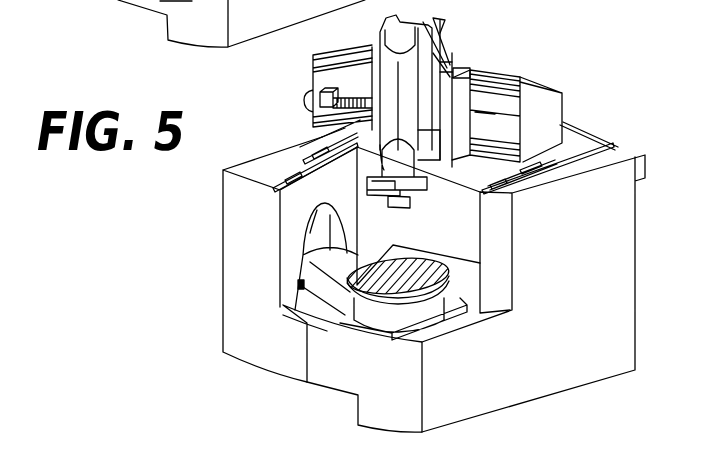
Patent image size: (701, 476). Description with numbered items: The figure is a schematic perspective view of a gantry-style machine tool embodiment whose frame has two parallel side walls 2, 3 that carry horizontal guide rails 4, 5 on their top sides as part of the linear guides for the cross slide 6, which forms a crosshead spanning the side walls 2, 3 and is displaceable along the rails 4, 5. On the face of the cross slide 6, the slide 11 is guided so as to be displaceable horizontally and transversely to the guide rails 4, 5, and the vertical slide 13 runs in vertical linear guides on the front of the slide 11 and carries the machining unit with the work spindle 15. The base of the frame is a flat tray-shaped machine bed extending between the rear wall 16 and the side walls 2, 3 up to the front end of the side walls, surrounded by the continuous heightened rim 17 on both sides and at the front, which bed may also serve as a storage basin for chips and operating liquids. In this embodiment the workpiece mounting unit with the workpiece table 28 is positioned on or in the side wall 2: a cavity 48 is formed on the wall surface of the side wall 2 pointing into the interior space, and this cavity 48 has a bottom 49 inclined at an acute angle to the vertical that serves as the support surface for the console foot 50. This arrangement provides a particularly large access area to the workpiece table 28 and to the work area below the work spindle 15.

The side wall 2 is at (234, 232).
The side wall 3 is at (569, 277).
The horizontal guide rail 4 is at (322, 142).
The horizontal guide rail 5 is at (590, 131).
The cross slide 6 is at (547, 117).
The slide 11 is at (457, 97).
The vertical slide 13 is at (438, 80).
The work spindle 15 is at (393, 207).
The rear wall 16 is at (461, 234).
The heightened rim 17 is at (384, 375).
The workpiece table 28 is at (445, 284).
The cavity 48 is at (310, 232).
The bottom 49 is at (334, 228).
The console foot 50 is at (318, 225).